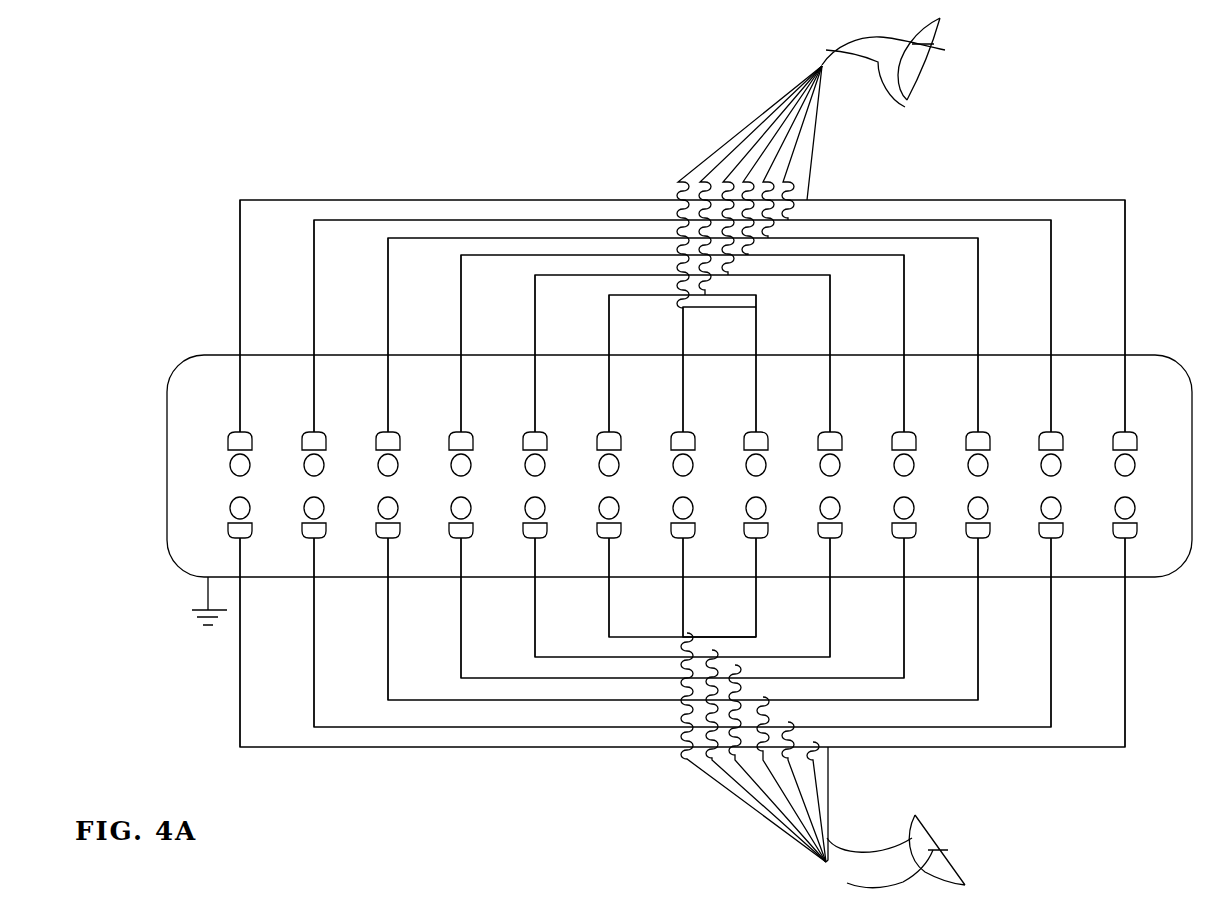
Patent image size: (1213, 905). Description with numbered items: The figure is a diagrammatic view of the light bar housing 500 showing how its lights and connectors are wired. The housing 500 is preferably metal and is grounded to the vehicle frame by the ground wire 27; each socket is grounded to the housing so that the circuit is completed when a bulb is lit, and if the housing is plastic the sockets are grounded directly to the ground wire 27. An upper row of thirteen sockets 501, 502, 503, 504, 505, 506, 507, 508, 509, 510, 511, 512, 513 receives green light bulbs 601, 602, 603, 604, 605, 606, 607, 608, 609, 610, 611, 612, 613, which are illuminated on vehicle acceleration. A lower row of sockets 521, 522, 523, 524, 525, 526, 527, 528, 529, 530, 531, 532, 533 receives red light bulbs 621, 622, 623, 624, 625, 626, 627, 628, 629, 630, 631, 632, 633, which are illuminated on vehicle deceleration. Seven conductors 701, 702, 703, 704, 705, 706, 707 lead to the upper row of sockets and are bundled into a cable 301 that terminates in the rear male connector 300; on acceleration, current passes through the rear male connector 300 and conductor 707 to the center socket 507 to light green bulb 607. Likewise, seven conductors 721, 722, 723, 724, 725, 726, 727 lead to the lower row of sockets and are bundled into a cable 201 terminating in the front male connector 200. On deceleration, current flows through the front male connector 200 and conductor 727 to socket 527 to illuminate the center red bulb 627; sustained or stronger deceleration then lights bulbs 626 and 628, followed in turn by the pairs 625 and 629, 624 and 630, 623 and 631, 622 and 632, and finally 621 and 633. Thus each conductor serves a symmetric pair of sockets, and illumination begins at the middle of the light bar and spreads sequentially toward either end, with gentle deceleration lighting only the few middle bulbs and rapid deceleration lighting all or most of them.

The light bar housing 500 is at (182, 405).
The ground wire 27 is at (200, 595).
The rear male connector 300 is at (945, 50).
The cable 301 is at (905, 107).
The front male connector 200 is at (912, 838).
The cable 201 is at (890, 797).
The socket 501 is at (228, 352).
The socket 502 is at (302, 352).
The socket 503 is at (376, 352).
The socket 504 is at (449, 352).
The socket 505 is at (523, 352).
The socket 506 is at (597, 352).
The socket 507 is at (671, 352).
The socket 508 is at (744, 352).
The socket 509 is at (818, 352).
The socket 510 is at (892, 352).
The socket 511 is at (966, 352).
The socket 512 is at (1039, 352).
The socket 513 is at (1113, 352).
The green light bulb 601 is at (229, 466).
The green light bulb 602 is at (303, 466).
The green light bulb 603 is at (377, 466).
The green light bulb 604 is at (450, 466).
The green light bulb 605 is at (524, 466).
The green light bulb 606 is at (598, 466).
The green light bulb 607 is at (672, 466).
The green light bulb 608 is at (745, 466).
The green light bulb 609 is at (819, 466).
The green light bulb 610 is at (893, 466).
The green light bulb 611 is at (967, 466).
The green light bulb 612 is at (1040, 466).
The green light bulb 613 is at (1114, 466).
The socket 521 is at (246, 582).
The socket 522 is at (320, 582).
The socket 523 is at (394, 582).
The socket 524 is at (467, 582).
The socket 525 is at (541, 582).
The socket 526 is at (615, 582).
The socket 527 is at (689, 582).
The socket 528 is at (762, 582).
The socket 529 is at (836, 582).
The socket 530 is at (910, 582).
The socket 531 is at (984, 582).
The socket 532 is at (1057, 582).
The socket 533 is at (1131, 582).
The red light bulb 621 is at (250, 507).
The red light bulb 622 is at (324, 507).
The red light bulb 623 is at (398, 507).
The red light bulb 624 is at (471, 507).
The red light bulb 625 is at (545, 507).
The red light bulb 626 is at (619, 507).
The red light bulb 627 is at (693, 507).
The red light bulb 628 is at (766, 507).
The red light bulb 629 is at (840, 507).
The red light bulb 630 is at (914, 507).
The red light bulb 631 is at (988, 507).
The red light bulb 632 is at (1061, 507).
The red light bulb 633 is at (1135, 507).
The conductor 701 is at (300, 198).
The conductor 702 is at (375, 218).
The conductor 703 is at (445, 237).
The conductor 704 is at (510, 255).
The conductor 705 is at (573, 273).
The conductor 706 is at (743, 295).
The conductor 707 is at (757, 113).
The conductor 721 is at (290, 747).
The conductor 722 is at (362, 727).
The conductor 723 is at (428, 700).
The conductor 724 is at (510, 678).
The conductor 725 is at (575, 657).
The conductor 726 is at (807, 658).
The conductor 727 is at (770, 830).